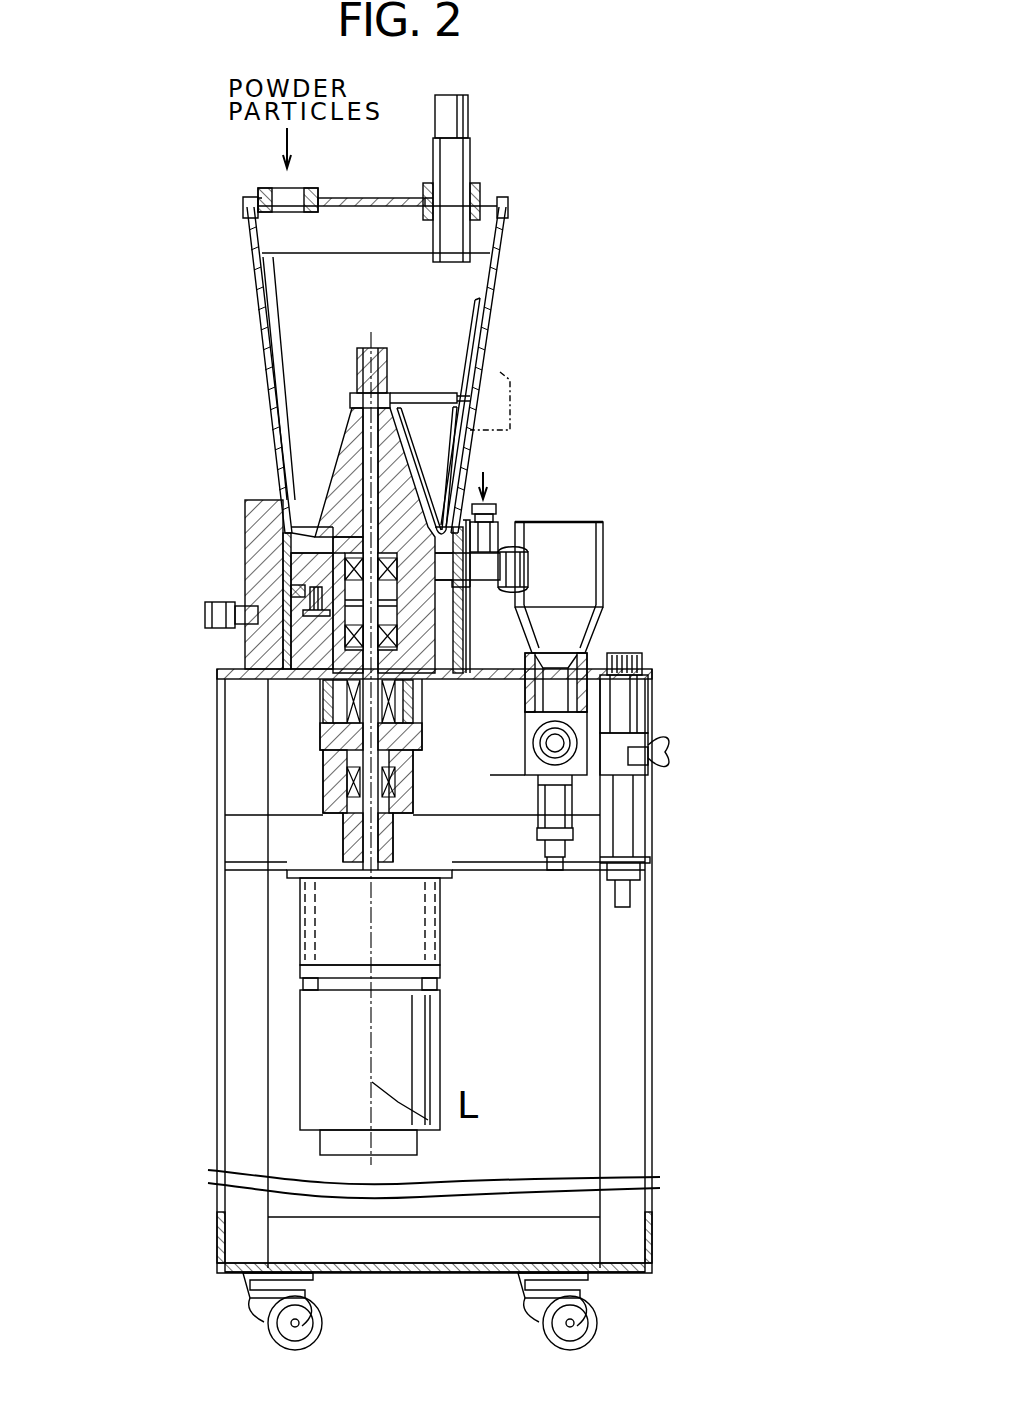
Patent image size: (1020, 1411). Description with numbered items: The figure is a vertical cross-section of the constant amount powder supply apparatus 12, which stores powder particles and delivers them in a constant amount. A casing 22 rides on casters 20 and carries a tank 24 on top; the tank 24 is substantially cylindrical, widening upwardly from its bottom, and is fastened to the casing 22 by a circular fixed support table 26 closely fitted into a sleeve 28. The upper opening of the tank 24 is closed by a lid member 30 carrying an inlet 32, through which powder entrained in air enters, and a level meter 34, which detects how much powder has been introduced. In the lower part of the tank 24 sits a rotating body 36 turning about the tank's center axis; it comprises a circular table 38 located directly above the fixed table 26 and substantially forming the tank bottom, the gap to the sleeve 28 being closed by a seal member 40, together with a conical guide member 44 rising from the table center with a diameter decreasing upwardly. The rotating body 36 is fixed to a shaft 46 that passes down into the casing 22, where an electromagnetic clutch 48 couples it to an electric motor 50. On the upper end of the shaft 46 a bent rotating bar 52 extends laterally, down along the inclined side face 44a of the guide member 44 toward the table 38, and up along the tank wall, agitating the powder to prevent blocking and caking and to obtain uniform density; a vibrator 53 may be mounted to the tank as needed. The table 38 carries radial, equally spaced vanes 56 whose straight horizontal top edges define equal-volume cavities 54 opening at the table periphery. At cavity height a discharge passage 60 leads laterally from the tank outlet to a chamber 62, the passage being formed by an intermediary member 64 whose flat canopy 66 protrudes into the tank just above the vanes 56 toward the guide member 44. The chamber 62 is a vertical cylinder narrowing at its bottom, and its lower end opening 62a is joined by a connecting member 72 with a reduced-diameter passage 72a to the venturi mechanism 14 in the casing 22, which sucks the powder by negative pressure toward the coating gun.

The constant amount powder supply apparatus 12 is at (694, 302).
The venturi mechanism 14 is at (590, 752).
The casters 20 is at (320, 1320).
The casing 22 is at (650, 1017).
The tank 24 is at (503, 297).
The circular fixed support table 26 is at (262, 630).
The sleeve 28 is at (255, 665).
The lid member 30 is at (372, 200).
The inlet 32 is at (282, 188).
The level meter 34 is at (462, 138).
The rotating body 36 is at (450, 422).
The circular table 38 is at (283, 575).
The seal member 40 is at (285, 590).
The guide member 44 is at (368, 468).
The inclined side face 44a is at (318, 496).
The shaft 46 is at (398, 472).
The electromagnetic clutch 48 is at (421, 770).
The electric motor 50 is at (440, 1048).
The rotating bar 52 is at (490, 336).
The vibrator 53 is at (497, 372).
The cavities 54 is at (434, 600).
The vanes 56 is at (292, 540).
The discharge passage 60 is at (528, 560).
The chamber 62 is at (590, 576).
The lower end opening 62a is at (548, 648).
The intermediary member 64 is at (463, 582).
The canopy 66 is at (500, 532).
The connecting member 72 is at (575, 724).
The passage 72a is at (580, 667).